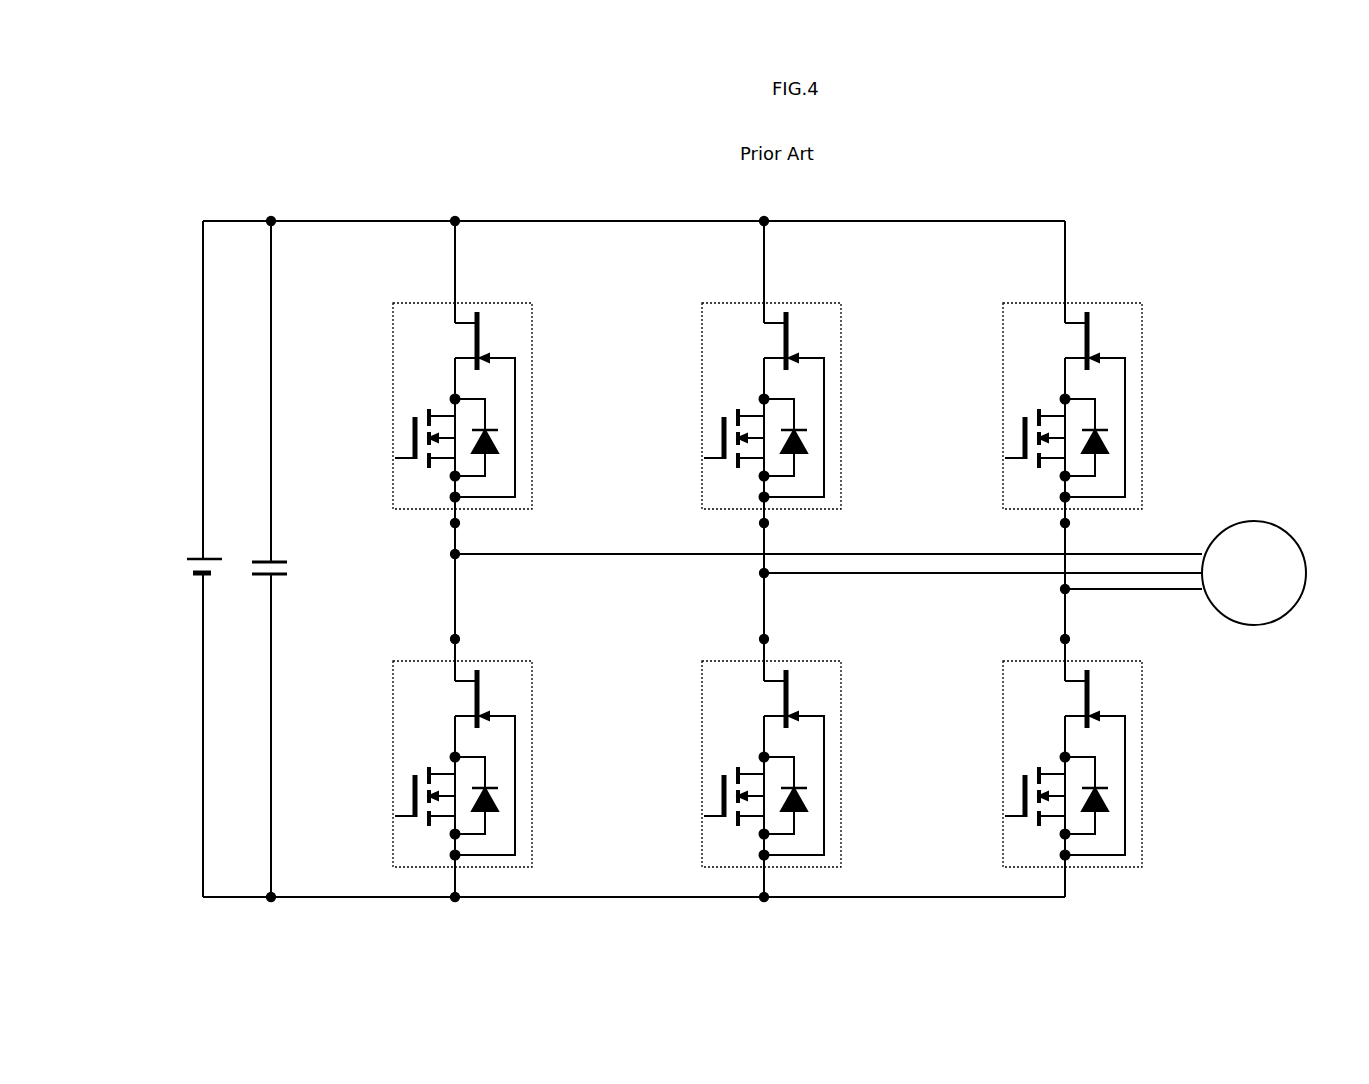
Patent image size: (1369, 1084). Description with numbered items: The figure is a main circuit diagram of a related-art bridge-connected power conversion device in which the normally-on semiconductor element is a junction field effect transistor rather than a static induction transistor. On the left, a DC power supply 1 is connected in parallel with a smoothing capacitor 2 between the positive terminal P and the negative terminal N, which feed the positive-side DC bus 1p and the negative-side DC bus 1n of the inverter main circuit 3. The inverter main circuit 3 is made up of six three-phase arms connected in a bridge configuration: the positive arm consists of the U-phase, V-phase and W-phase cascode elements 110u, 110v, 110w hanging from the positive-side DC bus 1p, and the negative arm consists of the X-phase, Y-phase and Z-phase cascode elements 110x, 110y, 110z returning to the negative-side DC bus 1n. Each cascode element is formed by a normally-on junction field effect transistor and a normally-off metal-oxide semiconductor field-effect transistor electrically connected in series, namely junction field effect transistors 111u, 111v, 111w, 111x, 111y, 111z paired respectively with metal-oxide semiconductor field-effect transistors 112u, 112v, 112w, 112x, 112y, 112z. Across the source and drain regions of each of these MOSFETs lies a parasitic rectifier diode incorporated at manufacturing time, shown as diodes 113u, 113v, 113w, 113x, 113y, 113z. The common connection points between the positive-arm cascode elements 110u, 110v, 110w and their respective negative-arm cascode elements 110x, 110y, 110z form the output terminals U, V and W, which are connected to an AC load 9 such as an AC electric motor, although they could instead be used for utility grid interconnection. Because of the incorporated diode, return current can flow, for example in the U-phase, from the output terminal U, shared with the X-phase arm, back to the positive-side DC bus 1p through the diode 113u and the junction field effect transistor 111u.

The DC power supply 1 is at (192, 555).
The smoothing capacitor 2 is at (263, 557).
The inverter main circuit 3 is at (750, 213).
The positive-side DC bus 1p is at (496, 217).
The negative-side DC bus 1n is at (497, 899).
The AC load 9 is at (1254, 521).
The positive terminal P is at (188, 222).
The negative terminal N is at (184, 899).
The output terminal U is at (458, 557).
The output terminal V is at (767, 576).
The output terminal W is at (1068, 593).
The cascode element 110u is at (492, 387).
The cascode element 110v is at (800, 387).
The cascode element 110w is at (1103, 387).
The cascode element 110x is at (491, 746).
The cascode element 110y is at (800, 746).
The cascode element 110z is at (1101, 746).
The junction field effect transistor 111u is at (523, 404).
The junction field effect transistor 111v is at (831, 404).
The junction field effect transistor 111w is at (1134, 404).
The junction field effect transistor 111x is at (522, 762).
The junction field effect transistor 111y is at (831, 762).
The junction field effect transistor 111z is at (1132, 762).
The metal-oxide semiconductor field-effect transistor 112u is at (425, 413).
The metal-oxide semiconductor field-effect transistor 112v is at (734, 413).
The metal-oxide semiconductor field-effect transistor 112w is at (1035, 413).
The metal-oxide semiconductor field-effect transistor 112x is at (425, 771).
The metal-oxide semiconductor field-effect transistor 112y is at (734, 771).
The metal-oxide semiconductor field-effect transistor 112z is at (1035, 771).
The diode 113u is at (523, 434).
The diode 113v is at (831, 434).
The diode 113w is at (1134, 434).
The diode 113x is at (522, 792).
The diode 113y is at (831, 792).
The diode 113z is at (1132, 792).